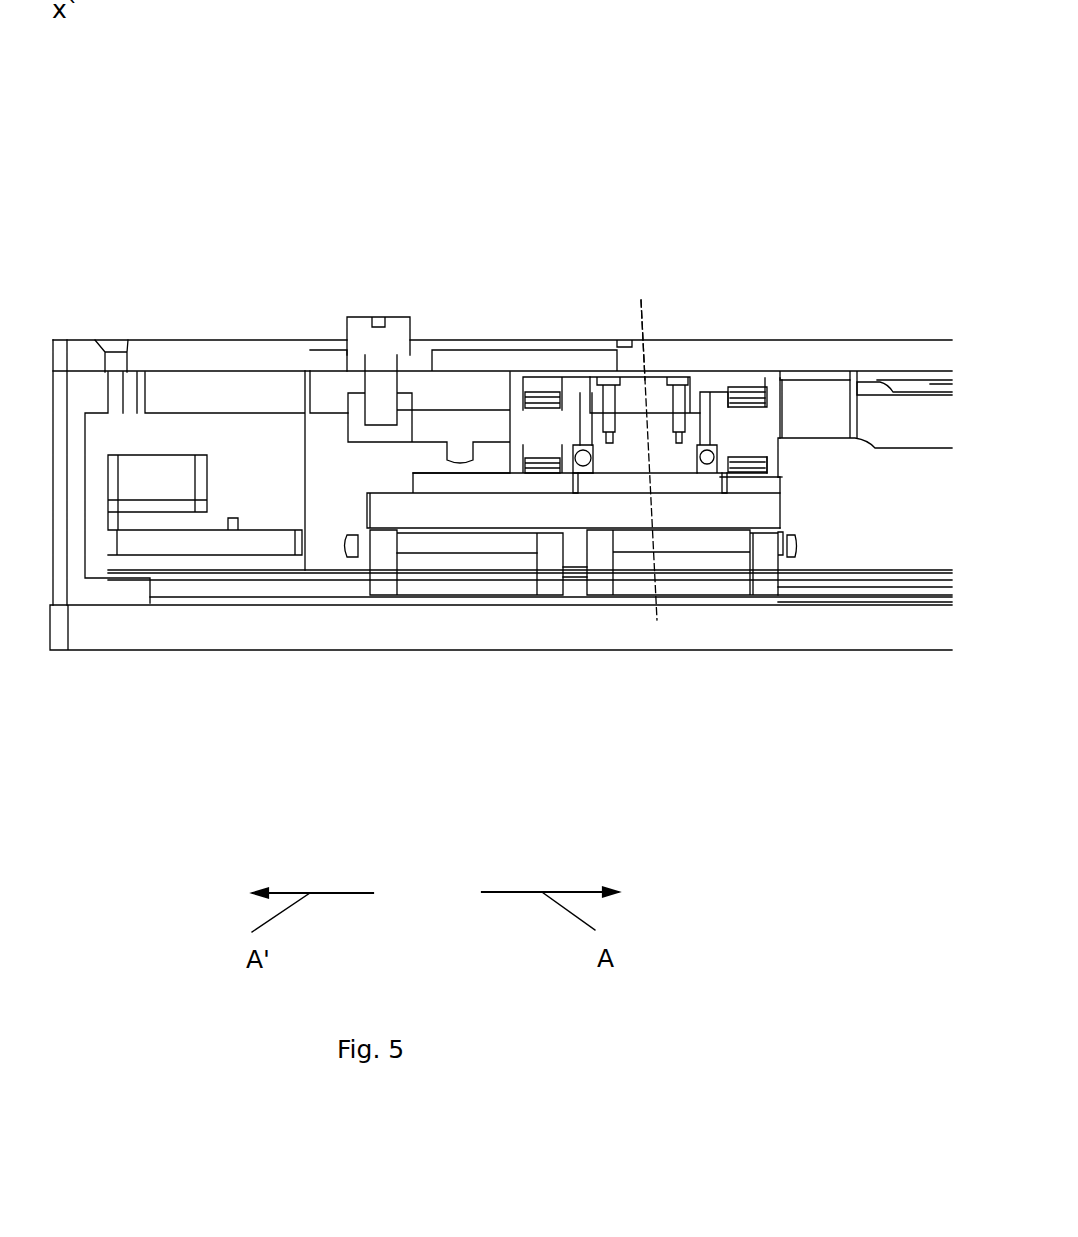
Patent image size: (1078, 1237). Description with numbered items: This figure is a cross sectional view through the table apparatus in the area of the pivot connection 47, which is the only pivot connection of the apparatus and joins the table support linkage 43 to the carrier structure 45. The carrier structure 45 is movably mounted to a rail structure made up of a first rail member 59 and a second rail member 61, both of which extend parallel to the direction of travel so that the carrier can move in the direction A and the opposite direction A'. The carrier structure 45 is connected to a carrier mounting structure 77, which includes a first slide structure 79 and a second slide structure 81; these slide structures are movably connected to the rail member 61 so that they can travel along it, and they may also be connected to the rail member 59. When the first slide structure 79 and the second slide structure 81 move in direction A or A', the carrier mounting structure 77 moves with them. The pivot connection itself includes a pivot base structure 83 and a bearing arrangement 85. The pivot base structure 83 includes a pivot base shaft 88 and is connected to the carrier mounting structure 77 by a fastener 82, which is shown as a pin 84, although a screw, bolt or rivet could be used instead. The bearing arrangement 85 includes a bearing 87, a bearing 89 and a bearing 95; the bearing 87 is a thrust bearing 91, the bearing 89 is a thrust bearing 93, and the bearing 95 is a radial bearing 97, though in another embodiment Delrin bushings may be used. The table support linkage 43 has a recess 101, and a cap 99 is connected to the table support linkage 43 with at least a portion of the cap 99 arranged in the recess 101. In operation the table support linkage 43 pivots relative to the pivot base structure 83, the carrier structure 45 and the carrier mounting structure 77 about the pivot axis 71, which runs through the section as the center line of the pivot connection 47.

The table support linkage 43 is at (892, 333).
The carrier structure 45 is at (368, 497).
The pivot connection 47 is at (783, 465).
The first rail member 59 is at (87, 358).
The second rail member 61 is at (195, 587).
The pivot axis 71 is at (638, 307).
The carrier mounting structure 77 is at (462, 574).
The first slide structure 79 is at (490, 572).
The second slide structure 81 is at (670, 565).
The fastener 82 is at (748, 465).
The pivot base structure 83 is at (599, 447).
The pin 84 is at (727, 496).
The bearing arrangement 85 is at (716, 413).
The bearing 87 is at (733, 385).
The pivot base shaft 88 is at (630, 453).
The bearing 89 is at (779, 472).
The thrust bearing 91 is at (747, 388).
The thrust bearing 93 is at (772, 467).
The bearing 95 is at (575, 457).
The radial bearing 97 is at (578, 459).
The cap 99 is at (647, 345).
The recess 101 is at (631, 410).